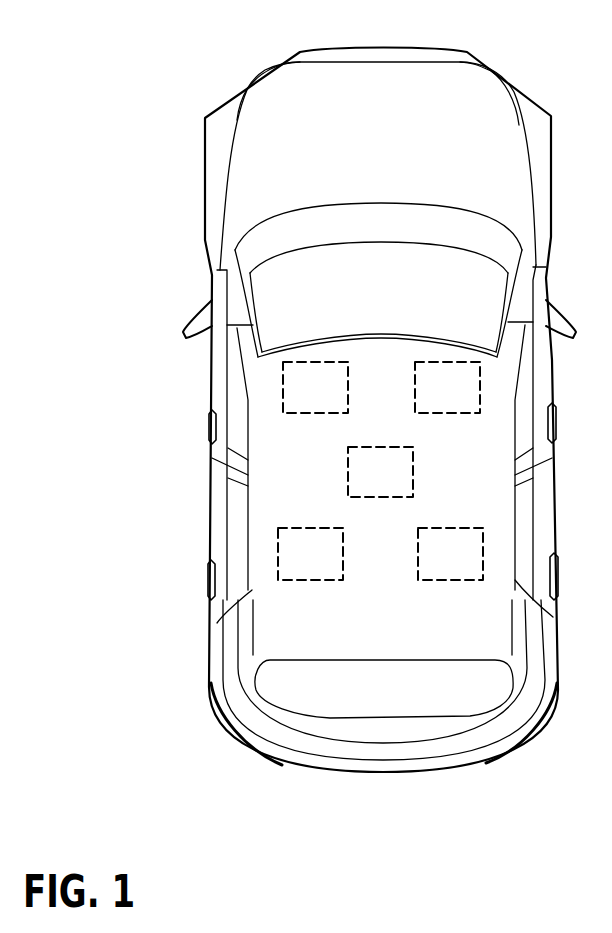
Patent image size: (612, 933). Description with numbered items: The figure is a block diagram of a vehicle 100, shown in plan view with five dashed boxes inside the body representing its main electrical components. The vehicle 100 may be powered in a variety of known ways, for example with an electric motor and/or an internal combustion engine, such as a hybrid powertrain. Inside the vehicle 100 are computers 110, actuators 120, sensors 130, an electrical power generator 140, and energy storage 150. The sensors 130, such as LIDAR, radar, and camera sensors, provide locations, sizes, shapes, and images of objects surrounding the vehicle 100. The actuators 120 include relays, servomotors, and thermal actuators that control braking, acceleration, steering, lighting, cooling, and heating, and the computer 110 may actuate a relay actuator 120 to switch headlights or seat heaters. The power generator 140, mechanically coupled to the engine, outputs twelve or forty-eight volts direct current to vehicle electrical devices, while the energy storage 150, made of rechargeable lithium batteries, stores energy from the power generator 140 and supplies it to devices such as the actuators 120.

The vehicle 100 is at (399, 613).
The computer 110 is at (298, 398).
The actuator 120 is at (429, 398).
The sensor 130 is at (363, 483).
The electrical power generator 140 is at (293, 565).
The energy storage 150 is at (433, 565).